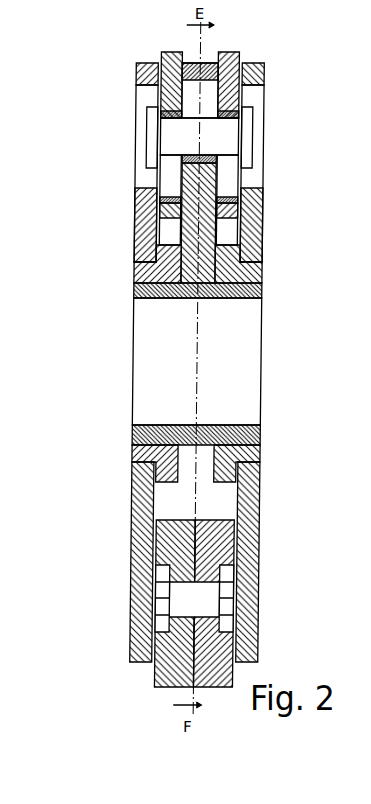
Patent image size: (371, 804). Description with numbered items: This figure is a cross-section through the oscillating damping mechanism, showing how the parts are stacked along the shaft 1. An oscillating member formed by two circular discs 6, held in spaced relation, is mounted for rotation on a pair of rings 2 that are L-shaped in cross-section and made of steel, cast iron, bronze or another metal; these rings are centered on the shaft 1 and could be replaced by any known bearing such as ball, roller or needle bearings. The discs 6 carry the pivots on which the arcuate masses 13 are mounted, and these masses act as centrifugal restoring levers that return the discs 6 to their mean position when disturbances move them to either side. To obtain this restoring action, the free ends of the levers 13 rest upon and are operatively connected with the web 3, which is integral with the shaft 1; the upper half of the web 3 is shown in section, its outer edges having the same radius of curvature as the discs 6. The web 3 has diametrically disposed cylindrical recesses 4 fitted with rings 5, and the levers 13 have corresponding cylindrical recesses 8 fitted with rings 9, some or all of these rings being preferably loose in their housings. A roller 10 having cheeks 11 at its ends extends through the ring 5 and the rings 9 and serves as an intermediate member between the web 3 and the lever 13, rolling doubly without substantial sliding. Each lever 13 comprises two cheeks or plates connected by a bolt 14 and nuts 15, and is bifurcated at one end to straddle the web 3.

The shaft 1 is at (262, 285).
The rings 2 is at (244, 268).
The web 3 is at (199, 240).
The cylindrical recesses 4 is at (233, 58).
The rings 5 is at (204, 97).
The circular discs 6 is at (150, 222).
The cylindrical recesses 8 is at (171, 176).
The rings 9 is at (164, 198).
The roller 10 is at (216, 142).
The cheeks 11 is at (154, 123).
The arcuate masses 13 is at (171, 73).
The bolt 14 is at (208, 602).
The nuts 15 is at (230, 595).